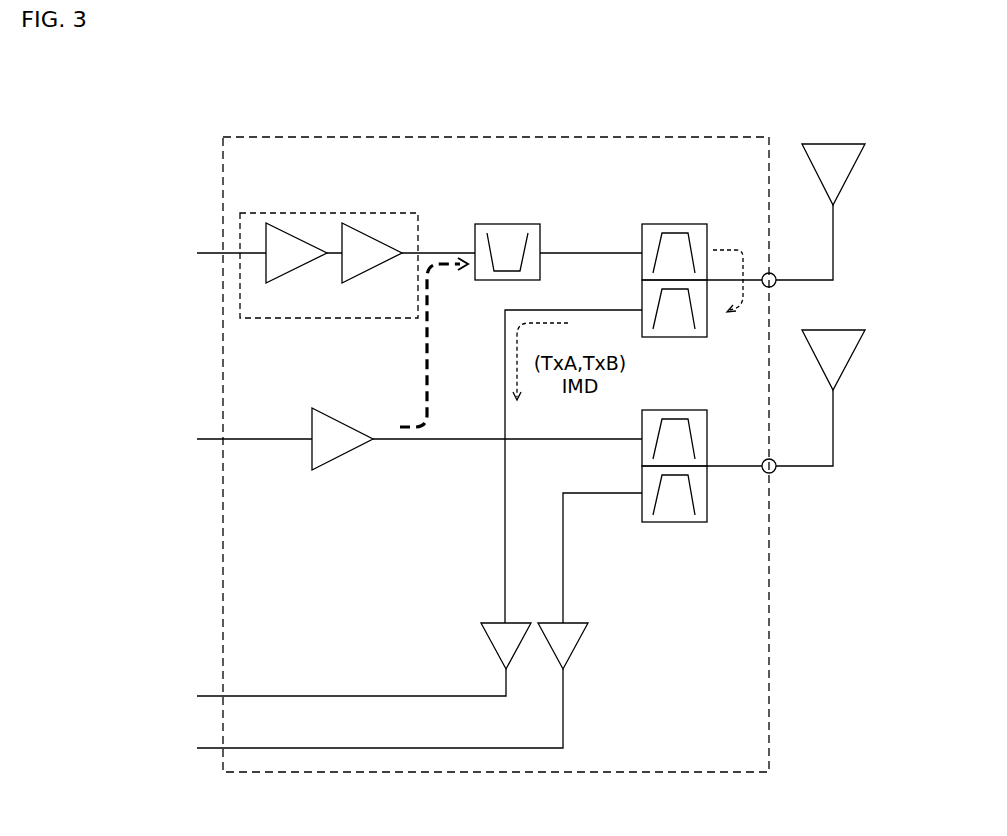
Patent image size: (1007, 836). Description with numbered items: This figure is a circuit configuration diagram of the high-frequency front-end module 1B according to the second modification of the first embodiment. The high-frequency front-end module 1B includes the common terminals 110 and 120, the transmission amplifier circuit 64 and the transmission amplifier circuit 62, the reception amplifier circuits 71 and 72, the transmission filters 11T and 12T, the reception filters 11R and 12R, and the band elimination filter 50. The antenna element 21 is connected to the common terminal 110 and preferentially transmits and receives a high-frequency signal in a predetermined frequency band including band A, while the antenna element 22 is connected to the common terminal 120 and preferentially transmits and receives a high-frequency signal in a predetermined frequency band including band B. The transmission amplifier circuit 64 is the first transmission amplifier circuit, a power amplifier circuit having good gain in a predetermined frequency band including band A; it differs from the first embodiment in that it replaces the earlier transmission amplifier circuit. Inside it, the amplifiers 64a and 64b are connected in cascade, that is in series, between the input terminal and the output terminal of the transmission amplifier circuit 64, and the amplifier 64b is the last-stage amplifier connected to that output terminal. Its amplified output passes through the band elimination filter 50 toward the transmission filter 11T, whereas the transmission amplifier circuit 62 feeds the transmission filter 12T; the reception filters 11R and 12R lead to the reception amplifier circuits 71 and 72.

The high-frequency front-end module 1B is at (678, 137).
The transmission amplifier circuit 64 is at (329, 252).
The amplifier 64a is at (298, 268).
The amplifier 64b is at (373, 268).
The band elimination filter 50 is at (493, 224).
The transmission filter 11T is at (707, 240).
The reception filter 11R is at (707, 317).
The transmission filter 12T is at (707, 432).
The reception filter 12R is at (707, 497).
The transmission amplifier circuit 62 is at (333, 415).
The antenna element 21 is at (825, 143).
The antenna element 22 is at (825, 329).
The common terminal 110 is at (775, 285).
The common terminal 120 is at (775, 471).
The reception amplifier circuit 71 is at (492, 622).
The reception amplifier circuit 72 is at (577, 622).